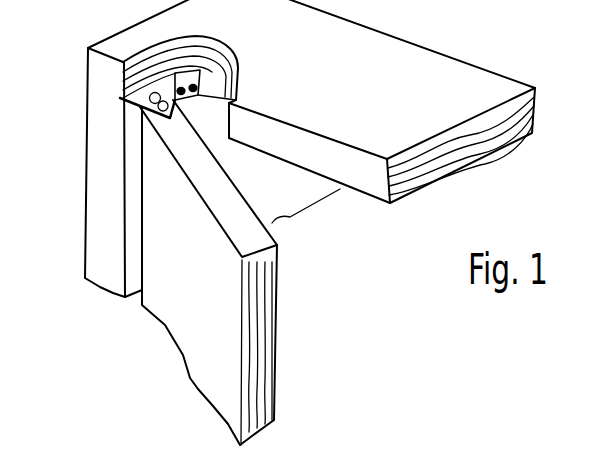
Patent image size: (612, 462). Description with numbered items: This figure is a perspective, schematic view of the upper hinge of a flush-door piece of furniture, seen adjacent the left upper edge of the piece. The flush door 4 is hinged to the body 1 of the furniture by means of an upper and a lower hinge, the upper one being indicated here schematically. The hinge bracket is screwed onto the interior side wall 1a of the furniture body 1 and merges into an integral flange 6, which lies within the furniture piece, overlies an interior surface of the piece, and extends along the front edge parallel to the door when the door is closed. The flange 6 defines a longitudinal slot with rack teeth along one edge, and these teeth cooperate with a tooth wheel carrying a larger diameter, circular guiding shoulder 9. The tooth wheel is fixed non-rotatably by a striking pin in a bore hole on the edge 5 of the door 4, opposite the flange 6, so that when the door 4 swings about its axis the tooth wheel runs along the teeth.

The furniture body 1 is at (379, 92).
The interior side wall 1a is at (97, 229).
The flush door 4 is at (179, 228).
The door edge 5 is at (242, 235).
The flange 6 is at (137, 113).
The guiding shoulder 9 is at (163, 110).